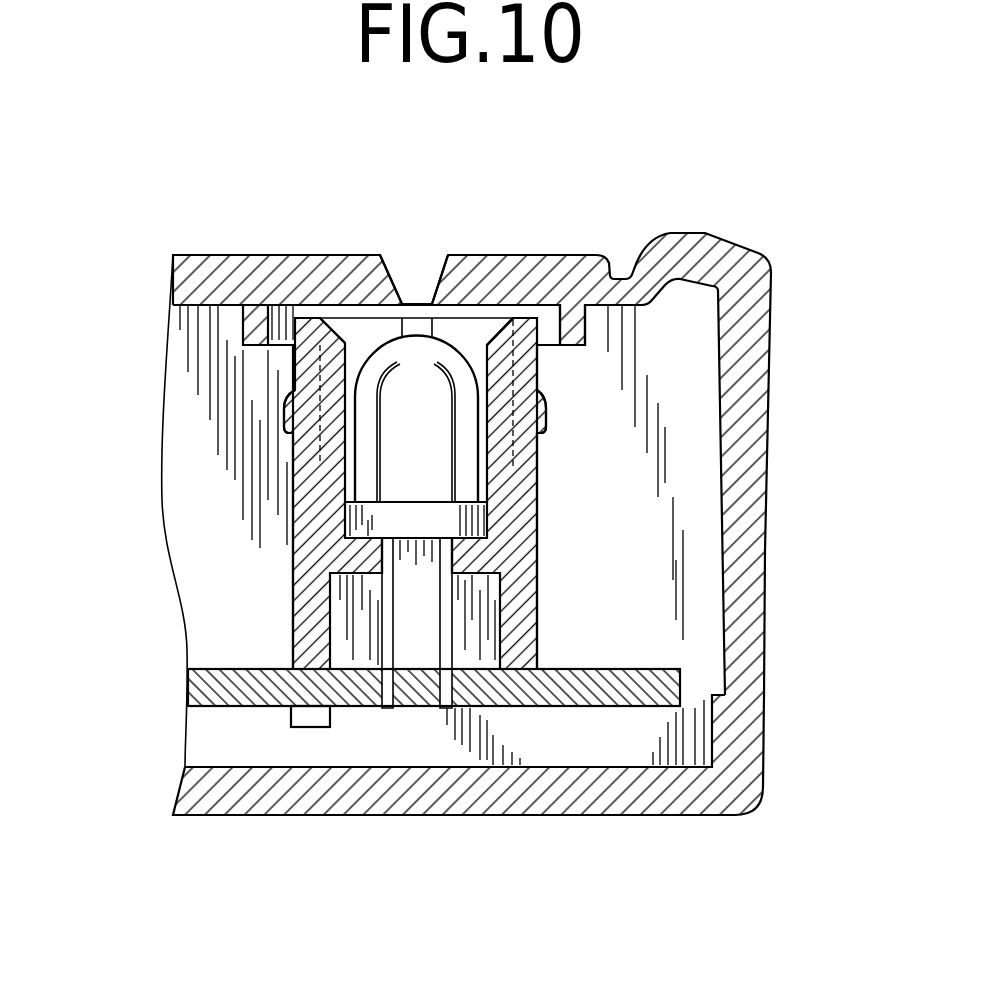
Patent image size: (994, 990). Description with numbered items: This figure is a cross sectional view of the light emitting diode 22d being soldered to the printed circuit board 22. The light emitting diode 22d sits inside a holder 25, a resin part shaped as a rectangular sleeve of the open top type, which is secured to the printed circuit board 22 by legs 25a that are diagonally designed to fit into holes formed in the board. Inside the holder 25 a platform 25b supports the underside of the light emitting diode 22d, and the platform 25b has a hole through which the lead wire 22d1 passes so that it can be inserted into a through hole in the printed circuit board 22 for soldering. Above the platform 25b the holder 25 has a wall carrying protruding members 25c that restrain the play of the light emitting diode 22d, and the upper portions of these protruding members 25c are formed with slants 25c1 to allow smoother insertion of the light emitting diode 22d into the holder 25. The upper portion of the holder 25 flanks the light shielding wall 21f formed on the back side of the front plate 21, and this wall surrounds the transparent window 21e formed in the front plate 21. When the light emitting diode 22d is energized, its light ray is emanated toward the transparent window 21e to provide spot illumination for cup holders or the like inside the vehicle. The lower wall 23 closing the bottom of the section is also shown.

The front plate 21 is at (727, 233).
The transparent window 21e is at (415, 258).
The light shielding wall 21f is at (586, 338).
The printed circuit board 22 is at (682, 687).
The light emitting diode 22d is at (455, 447).
The lead wire 22d1 is at (390, 627).
The housing bottom wall 23 is at (668, 820).
The holder 25 is at (545, 571).
The leg 25a is at (313, 724).
The platform 25b is at (467, 560).
The protruding member 25c is at (330, 440).
The slant 25c1 is at (490, 338).